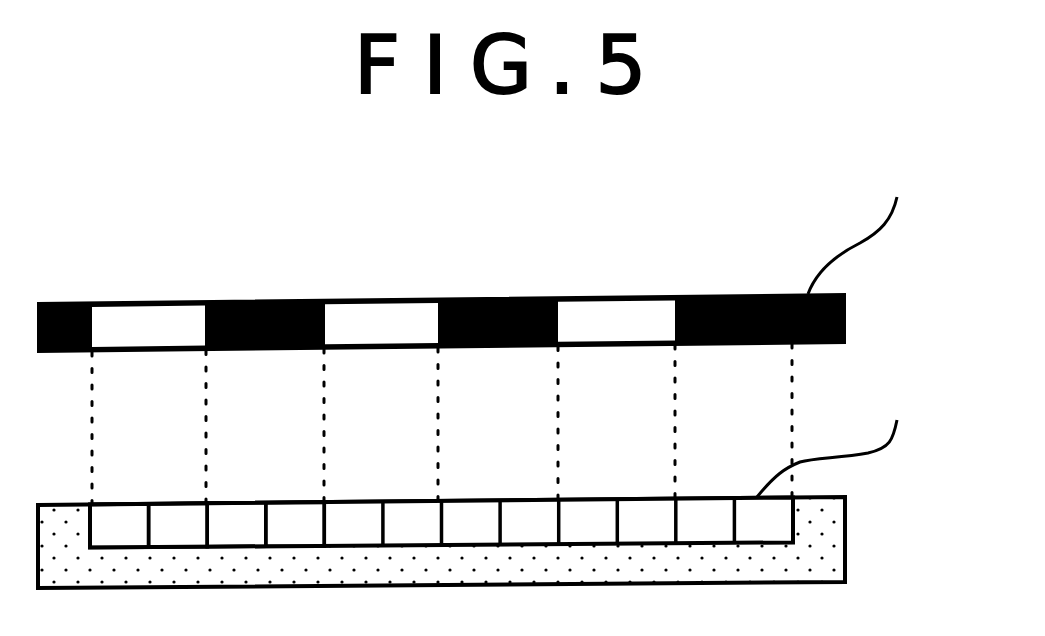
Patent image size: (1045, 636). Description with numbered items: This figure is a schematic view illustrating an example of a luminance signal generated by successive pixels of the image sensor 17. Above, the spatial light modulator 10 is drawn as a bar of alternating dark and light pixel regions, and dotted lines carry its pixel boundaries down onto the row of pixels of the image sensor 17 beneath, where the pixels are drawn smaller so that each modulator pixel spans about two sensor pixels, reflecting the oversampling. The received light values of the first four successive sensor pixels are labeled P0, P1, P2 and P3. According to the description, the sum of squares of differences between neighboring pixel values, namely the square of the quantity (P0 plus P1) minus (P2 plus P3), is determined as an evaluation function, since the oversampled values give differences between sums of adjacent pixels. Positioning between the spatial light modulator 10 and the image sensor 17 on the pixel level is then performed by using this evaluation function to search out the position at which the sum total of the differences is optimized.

The spatial light modulator 10 is at (845, 317).
The image sensor 17 is at (491, 483).
The received light value of first pixel P0 is at (119, 526).
The received light value of second pixel P1 is at (178, 525).
The received light value of third pixel P2 is at (236, 525).
The received light value of fourth pixel P3 is at (295, 524).